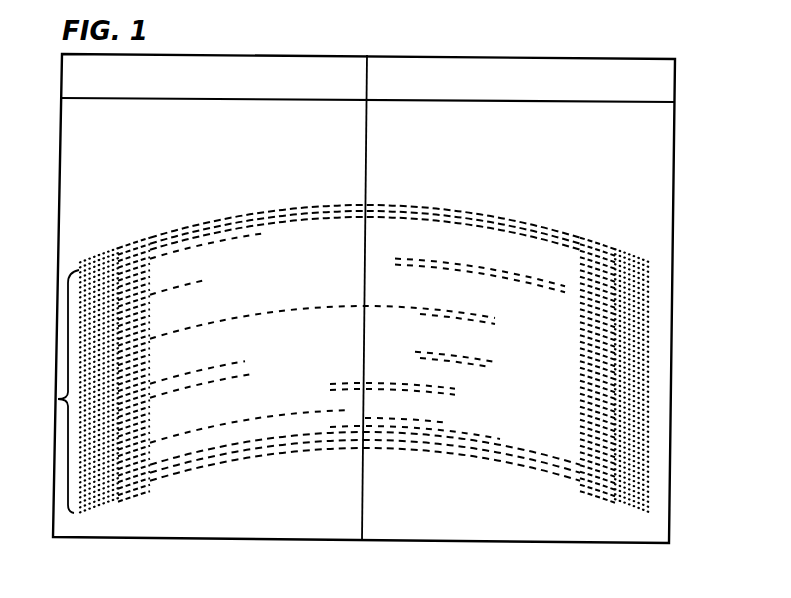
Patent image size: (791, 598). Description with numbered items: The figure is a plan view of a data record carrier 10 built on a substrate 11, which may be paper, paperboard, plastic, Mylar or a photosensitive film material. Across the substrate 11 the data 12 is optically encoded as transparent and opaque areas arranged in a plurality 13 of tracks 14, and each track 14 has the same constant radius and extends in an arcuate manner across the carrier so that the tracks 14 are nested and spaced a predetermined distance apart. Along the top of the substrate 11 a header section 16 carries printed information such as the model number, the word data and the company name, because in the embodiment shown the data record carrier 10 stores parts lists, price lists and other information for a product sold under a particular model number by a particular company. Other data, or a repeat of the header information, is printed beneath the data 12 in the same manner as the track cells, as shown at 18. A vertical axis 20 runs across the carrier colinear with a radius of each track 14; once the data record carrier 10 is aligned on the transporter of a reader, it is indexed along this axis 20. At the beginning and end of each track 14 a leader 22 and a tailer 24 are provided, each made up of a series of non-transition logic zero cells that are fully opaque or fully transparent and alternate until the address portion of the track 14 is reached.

The data record carrier 10 is at (679, 307).
The substrate 11 is at (515, 177).
The data 12 is at (584, 241).
The plurality of tracks 13 is at (58, 399).
The track 14 is at (263, 212).
The header section 16 is at (667, 88).
The printed data beneath the data 18 is at (465, 483).
The axis 20 is at (367, 127).
The leader 22 is at (100, 258).
The tailer 24 is at (624, 262).